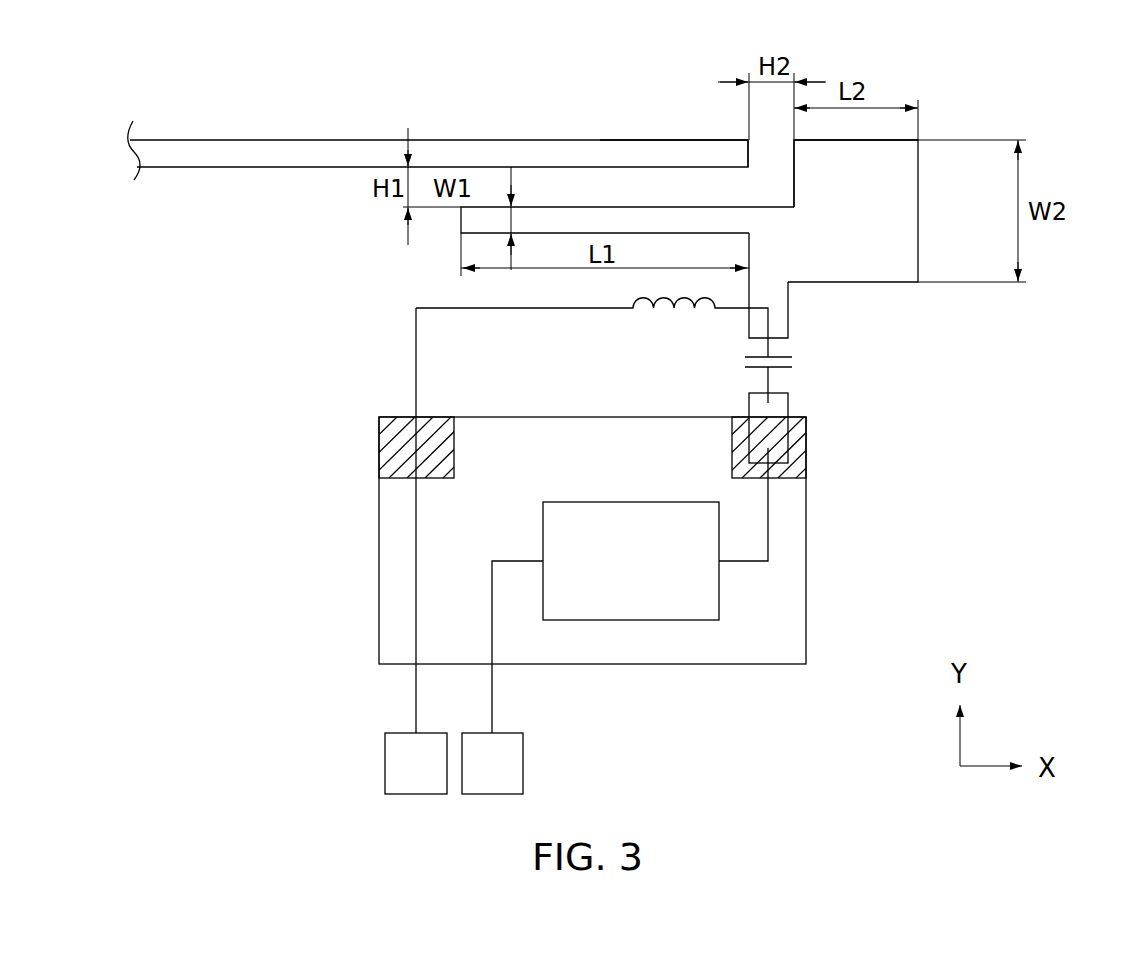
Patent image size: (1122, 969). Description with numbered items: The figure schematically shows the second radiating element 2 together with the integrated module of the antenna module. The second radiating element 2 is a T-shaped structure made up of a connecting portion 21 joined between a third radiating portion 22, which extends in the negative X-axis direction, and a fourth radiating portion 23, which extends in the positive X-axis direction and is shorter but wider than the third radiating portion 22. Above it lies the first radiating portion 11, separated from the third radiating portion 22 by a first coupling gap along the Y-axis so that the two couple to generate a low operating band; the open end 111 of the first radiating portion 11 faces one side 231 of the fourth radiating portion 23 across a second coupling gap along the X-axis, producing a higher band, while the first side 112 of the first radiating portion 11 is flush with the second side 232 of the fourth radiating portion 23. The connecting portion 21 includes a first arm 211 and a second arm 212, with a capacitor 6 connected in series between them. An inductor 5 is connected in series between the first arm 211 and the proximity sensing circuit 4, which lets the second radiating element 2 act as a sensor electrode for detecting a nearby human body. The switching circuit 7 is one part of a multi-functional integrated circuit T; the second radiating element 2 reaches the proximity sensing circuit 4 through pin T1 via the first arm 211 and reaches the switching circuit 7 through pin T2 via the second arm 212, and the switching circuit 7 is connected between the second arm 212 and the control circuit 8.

The first radiating portion 11 is at (444, 147).
The open end 111 is at (752, 155).
The first side 112 is at (674, 130).
The second radiating element 2 is at (788, 272).
The connecting portion 21 is at (932, 348).
The first arm 211 is at (780, 325).
The second arm 212 is at (783, 401).
The third radiating portion 22 is at (553, 213).
The fourth radiating portion 23 is at (916, 259).
The one side of the fourth radiating portion 231 is at (782, 157).
The second side 232 is at (891, 137).
The proximity sensing circuit 4 is at (400, 771).
The inductor 5 is at (659, 333).
The capacitor 6 is at (726, 367).
The switching circuit 7 is at (632, 500).
The control circuit 8 is at (513, 772).
The multi-functional integrated circuit T is at (587, 540).
The pin T1 is at (392, 446).
The pin T2 is at (797, 443).